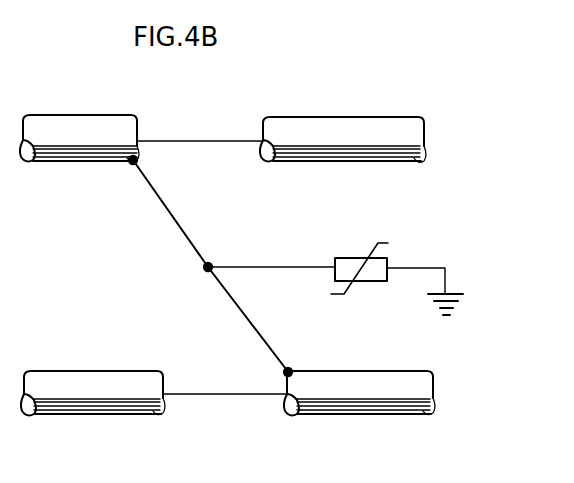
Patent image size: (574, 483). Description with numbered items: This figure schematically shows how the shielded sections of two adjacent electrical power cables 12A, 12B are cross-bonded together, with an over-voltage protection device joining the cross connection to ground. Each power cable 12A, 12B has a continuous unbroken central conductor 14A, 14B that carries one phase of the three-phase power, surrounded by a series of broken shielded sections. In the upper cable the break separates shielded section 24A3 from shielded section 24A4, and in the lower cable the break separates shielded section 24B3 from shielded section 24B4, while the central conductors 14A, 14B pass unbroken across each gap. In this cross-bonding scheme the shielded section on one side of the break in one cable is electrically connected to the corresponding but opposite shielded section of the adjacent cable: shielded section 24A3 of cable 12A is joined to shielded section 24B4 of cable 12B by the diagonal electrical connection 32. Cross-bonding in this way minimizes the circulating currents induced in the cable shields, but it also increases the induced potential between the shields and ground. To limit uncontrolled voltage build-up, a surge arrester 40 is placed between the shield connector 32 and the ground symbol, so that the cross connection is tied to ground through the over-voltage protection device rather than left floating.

The shielded section 24A3 is at (50, 122).
The shielded section 24A4 is at (358, 123).
The shielded section 24B3 is at (103, 410).
The shielded section 24B4 is at (357, 412).
The central conductor 14A is at (196, 140).
The central conductor 14B is at (231, 396).
The electrical power cable 12A is at (474, 113).
The electrical power cable 12B is at (476, 352).
The electrical connection 32 is at (149, 187).
The surge arrester 40 is at (343, 246).